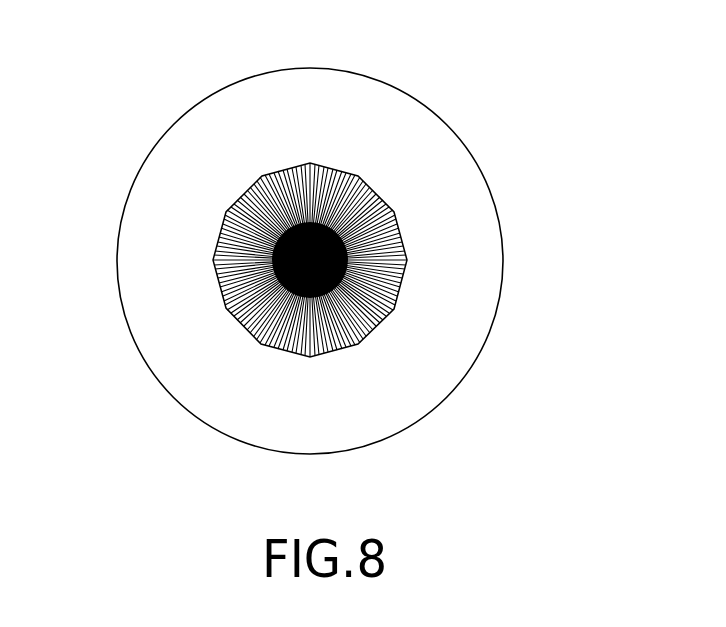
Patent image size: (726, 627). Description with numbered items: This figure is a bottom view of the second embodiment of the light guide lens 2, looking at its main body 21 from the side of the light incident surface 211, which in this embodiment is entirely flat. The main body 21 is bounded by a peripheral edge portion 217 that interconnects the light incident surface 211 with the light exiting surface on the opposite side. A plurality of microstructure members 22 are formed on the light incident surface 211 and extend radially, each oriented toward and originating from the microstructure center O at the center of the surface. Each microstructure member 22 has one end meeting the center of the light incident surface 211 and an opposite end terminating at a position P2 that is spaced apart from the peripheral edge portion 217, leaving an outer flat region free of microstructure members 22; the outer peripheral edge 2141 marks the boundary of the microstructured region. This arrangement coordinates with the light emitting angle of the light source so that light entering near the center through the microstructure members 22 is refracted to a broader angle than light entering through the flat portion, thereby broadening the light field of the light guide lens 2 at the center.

The light guide lens 2 is at (136, 121).
The main body 21 is at (457, 132).
The peripheral edge portion 217 is at (235, 80).
The light incident surface 211 is at (480, 217).
The microstructure members 22 is at (322, 171).
The position P2 is at (388, 322).
The outer peripheral edge 2141 is at (403, 288).
The microstructure center O is at (373, 265).